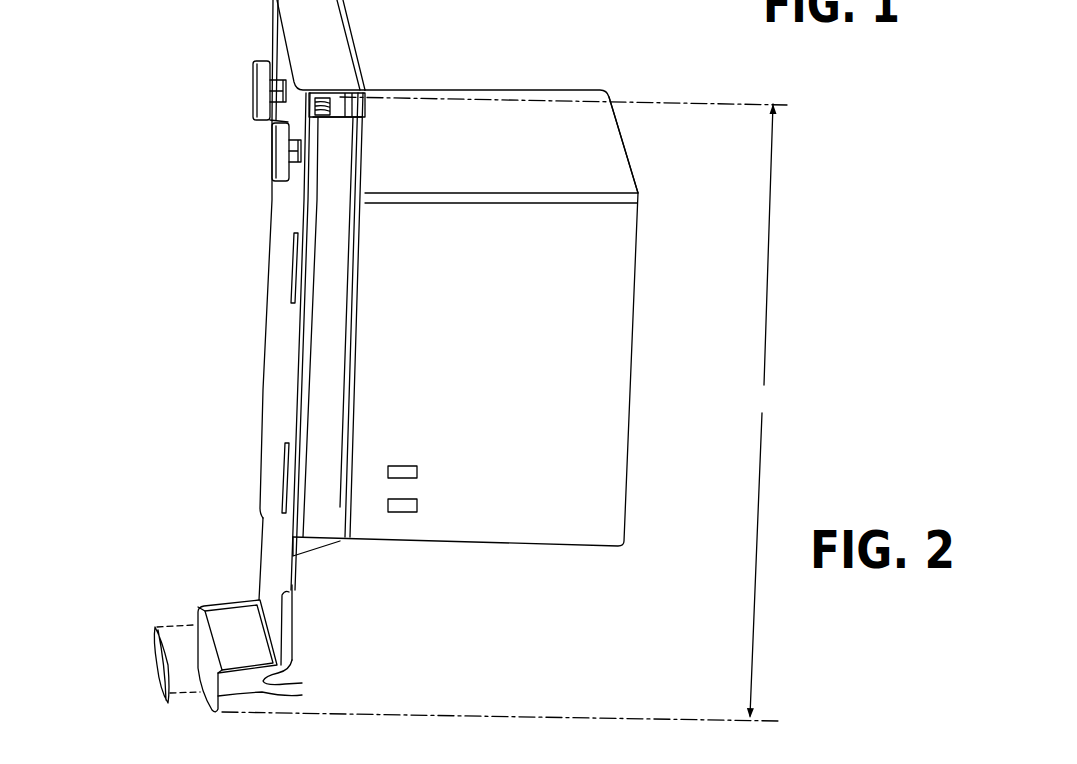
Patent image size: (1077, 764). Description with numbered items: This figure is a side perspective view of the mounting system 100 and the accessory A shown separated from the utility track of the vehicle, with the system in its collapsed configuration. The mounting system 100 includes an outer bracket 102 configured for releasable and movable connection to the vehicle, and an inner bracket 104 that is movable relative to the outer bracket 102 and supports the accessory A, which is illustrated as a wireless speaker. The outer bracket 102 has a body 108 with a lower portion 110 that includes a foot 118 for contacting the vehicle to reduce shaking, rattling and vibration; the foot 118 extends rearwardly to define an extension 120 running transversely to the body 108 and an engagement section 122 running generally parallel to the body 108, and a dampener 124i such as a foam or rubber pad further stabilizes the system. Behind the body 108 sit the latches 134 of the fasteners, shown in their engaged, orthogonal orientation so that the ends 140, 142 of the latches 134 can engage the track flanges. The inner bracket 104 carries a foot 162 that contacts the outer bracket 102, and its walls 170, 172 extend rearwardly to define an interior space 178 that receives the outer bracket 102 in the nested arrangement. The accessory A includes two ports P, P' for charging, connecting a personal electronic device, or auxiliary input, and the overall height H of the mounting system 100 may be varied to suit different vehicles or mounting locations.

The mounting system 100 is at (508, 65).
The outer bracket 102 is at (248, 323).
The inner bracket 104 is at (315, 32).
The body 108 is at (283, 409).
The lower portion 110 is at (238, 561).
The foot 118 is at (298, 627).
The extension 120 is at (263, 678).
The engagement section 122 is at (302, 695).
The dampener 124i is at (153, 660).
The latch 134 is at (240, 79).
The end of latch 140 is at (256, 68).
The end of latch 142 is at (272, 124).
The foot 162 is at (348, 560).
The wall 170 is at (325, 66).
The wall 172 is at (333, 293).
The interior space 178 is at (360, 107).
The accessory A is at (597, 165).
The overall height H is at (500, 412).
The port P is at (463, 449).
The port P' is at (466, 493).